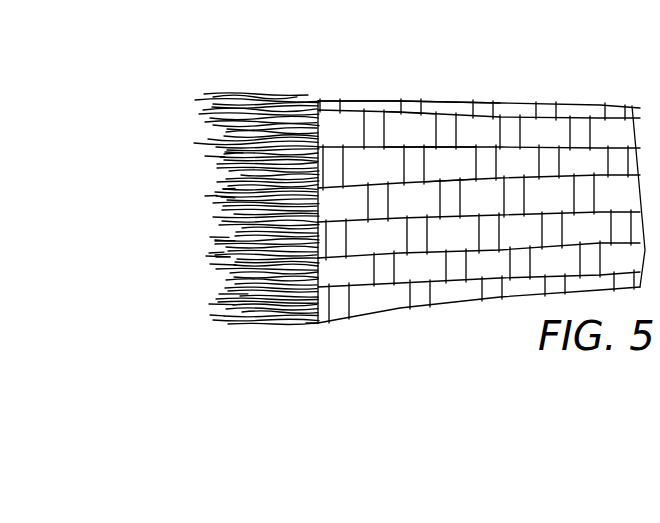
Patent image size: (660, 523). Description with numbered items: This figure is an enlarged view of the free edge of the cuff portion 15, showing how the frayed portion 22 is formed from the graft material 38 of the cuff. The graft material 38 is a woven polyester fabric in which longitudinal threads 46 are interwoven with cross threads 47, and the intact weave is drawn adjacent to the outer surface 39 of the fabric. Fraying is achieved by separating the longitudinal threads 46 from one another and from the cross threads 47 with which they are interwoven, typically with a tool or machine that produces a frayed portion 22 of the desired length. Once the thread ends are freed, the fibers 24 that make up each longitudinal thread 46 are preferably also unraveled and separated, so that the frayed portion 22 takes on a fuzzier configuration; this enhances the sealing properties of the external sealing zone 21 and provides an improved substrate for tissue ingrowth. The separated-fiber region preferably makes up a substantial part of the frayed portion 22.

The cuff portion 15 is at (522, 96).
The external sealing zone 21 is at (418, 78).
The frayed portion 22 is at (298, 80).
The fibers 24 is at (253, 108).
The graft material 38 is at (457, 160).
The outer surface 39 is at (495, 65).
The longitudinal threads 46 is at (420, 128).
The cross threads 47 is at (373, 127).